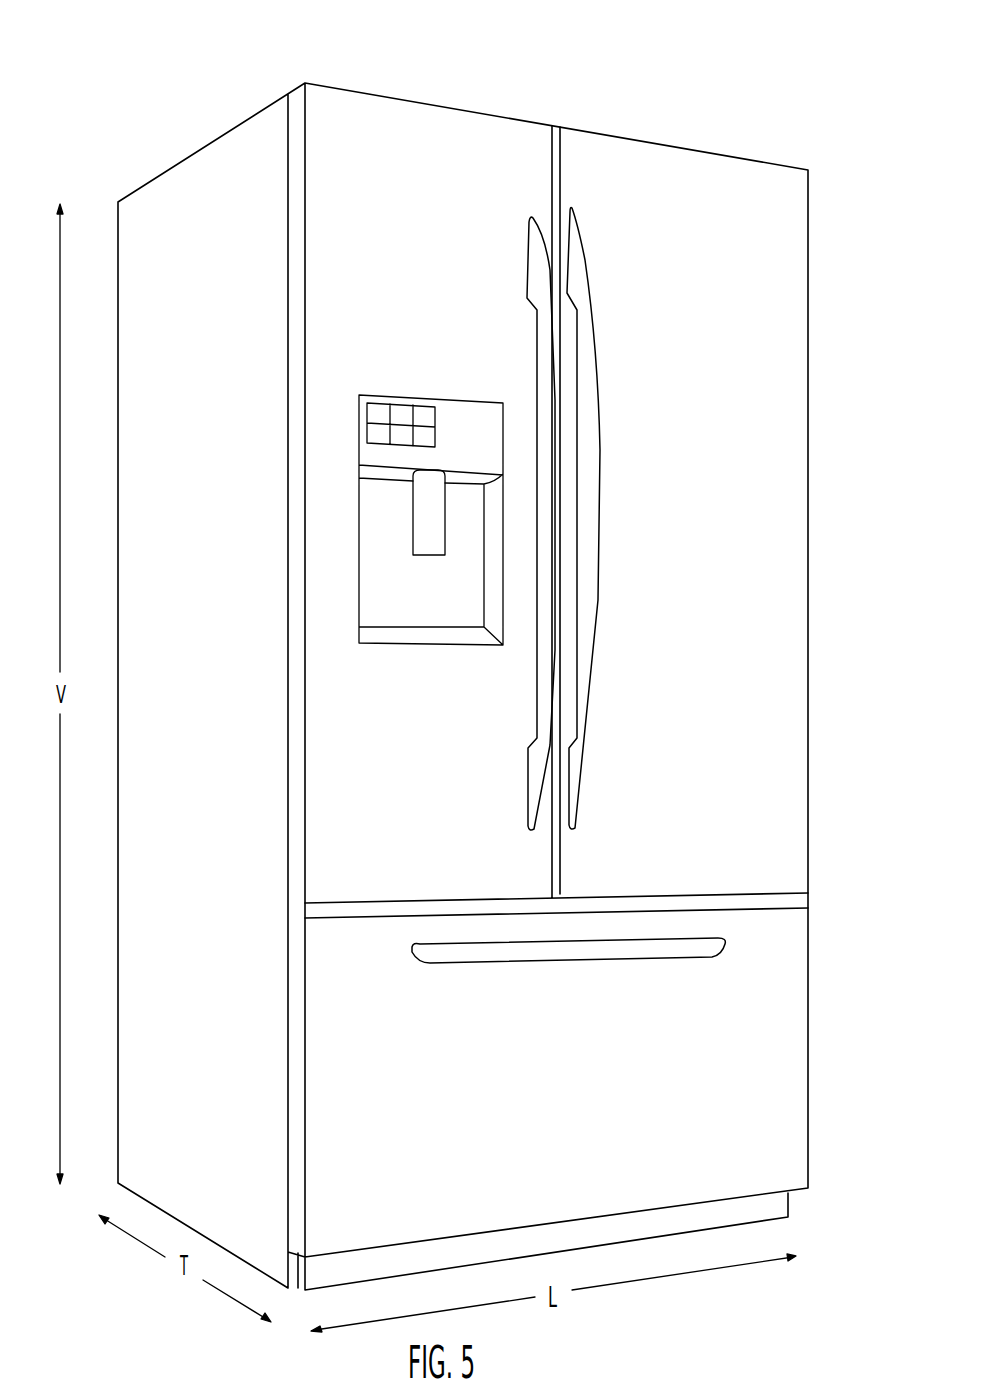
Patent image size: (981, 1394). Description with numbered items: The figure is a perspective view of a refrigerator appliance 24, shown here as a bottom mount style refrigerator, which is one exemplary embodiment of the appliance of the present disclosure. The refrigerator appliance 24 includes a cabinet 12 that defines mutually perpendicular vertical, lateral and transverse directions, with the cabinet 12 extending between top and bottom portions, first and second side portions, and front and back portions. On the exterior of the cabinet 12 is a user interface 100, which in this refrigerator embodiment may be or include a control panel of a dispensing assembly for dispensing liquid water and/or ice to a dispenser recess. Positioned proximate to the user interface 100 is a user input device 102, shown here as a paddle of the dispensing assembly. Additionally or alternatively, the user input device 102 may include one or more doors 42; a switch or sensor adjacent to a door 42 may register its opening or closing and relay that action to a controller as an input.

The cabinet 12 is at (222, 166).
The refrigerator appliance 24 is at (787, 92).
The doors 42 is at (752, 950).
The user interface 100 is at (455, 433).
The user input device 102 is at (402, 417).